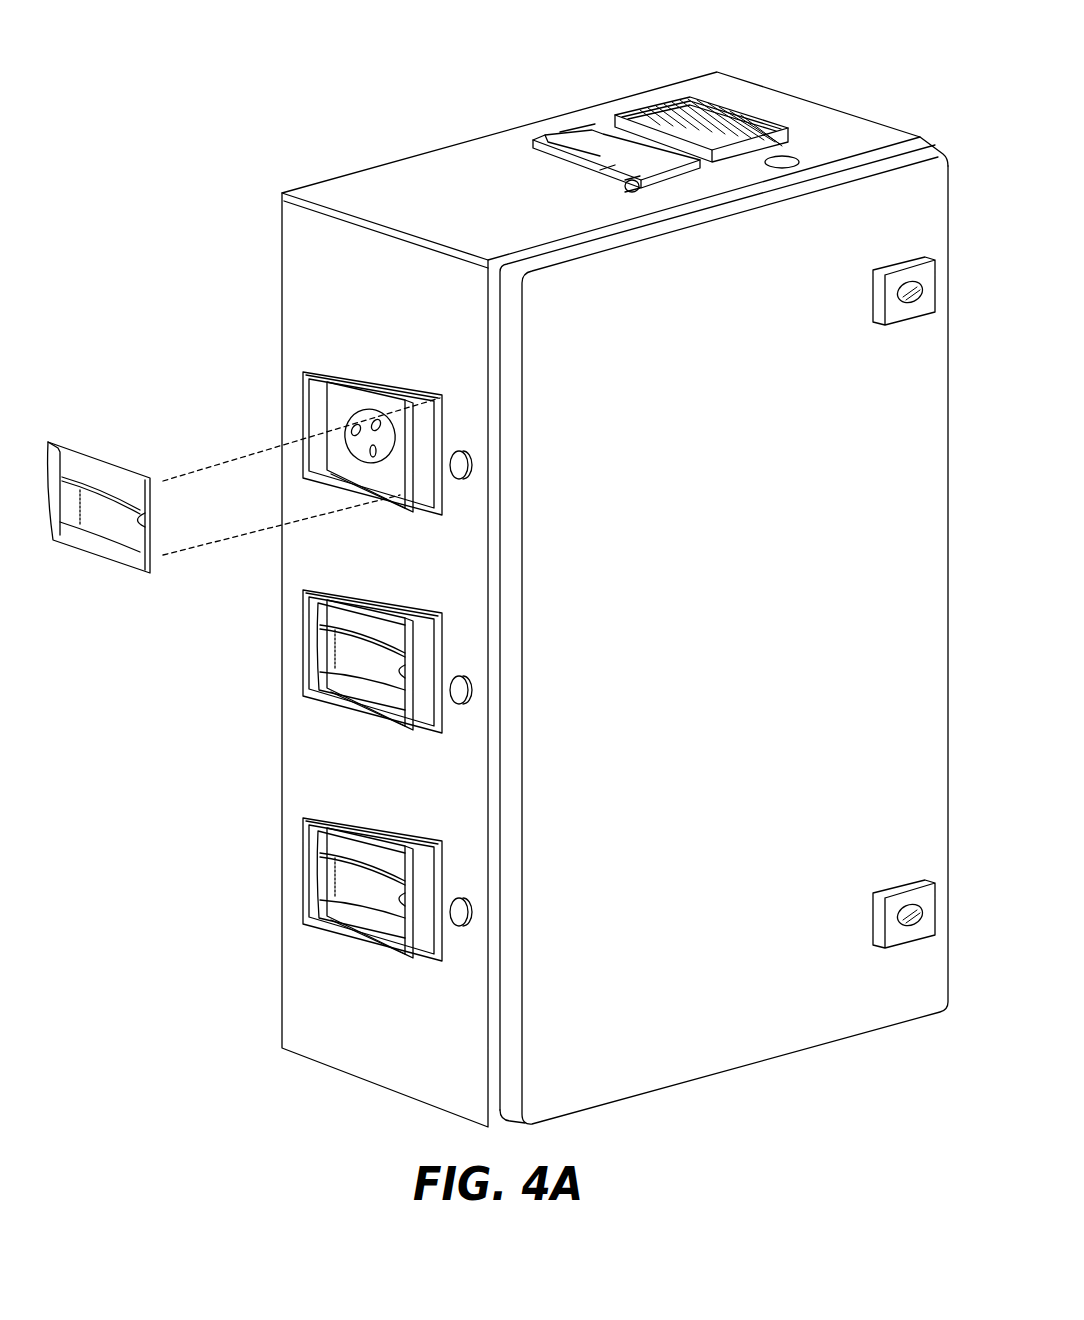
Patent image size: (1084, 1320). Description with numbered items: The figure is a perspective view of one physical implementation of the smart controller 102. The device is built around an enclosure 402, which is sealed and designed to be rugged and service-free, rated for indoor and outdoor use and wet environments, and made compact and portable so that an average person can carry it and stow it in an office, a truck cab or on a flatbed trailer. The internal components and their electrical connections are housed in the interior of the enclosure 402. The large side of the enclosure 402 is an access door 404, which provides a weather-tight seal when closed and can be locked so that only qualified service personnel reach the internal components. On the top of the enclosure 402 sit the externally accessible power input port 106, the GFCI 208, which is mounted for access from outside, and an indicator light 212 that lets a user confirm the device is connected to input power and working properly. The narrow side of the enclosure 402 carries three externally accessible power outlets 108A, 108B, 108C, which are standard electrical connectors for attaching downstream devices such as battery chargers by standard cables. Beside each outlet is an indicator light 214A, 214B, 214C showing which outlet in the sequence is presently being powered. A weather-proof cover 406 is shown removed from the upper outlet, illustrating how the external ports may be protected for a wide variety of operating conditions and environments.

The smart controller 102 is at (188, 92).
The power input port 106 is at (562, 135).
The GFCI 208 is at (710, 125).
The indicator light 212 is at (785, 165).
The enclosure 402 is at (615, 170).
The access door 404 is at (735, 640).
The power outlet 108A is at (363, 418).
The power outlet 108B is at (357, 625).
The power outlet 108C is at (362, 850).
The indicator light 214A is at (462, 463).
The indicator light 214B is at (462, 688).
The indicator light 214C is at (462, 910).
The cover 406 is at (95, 478).